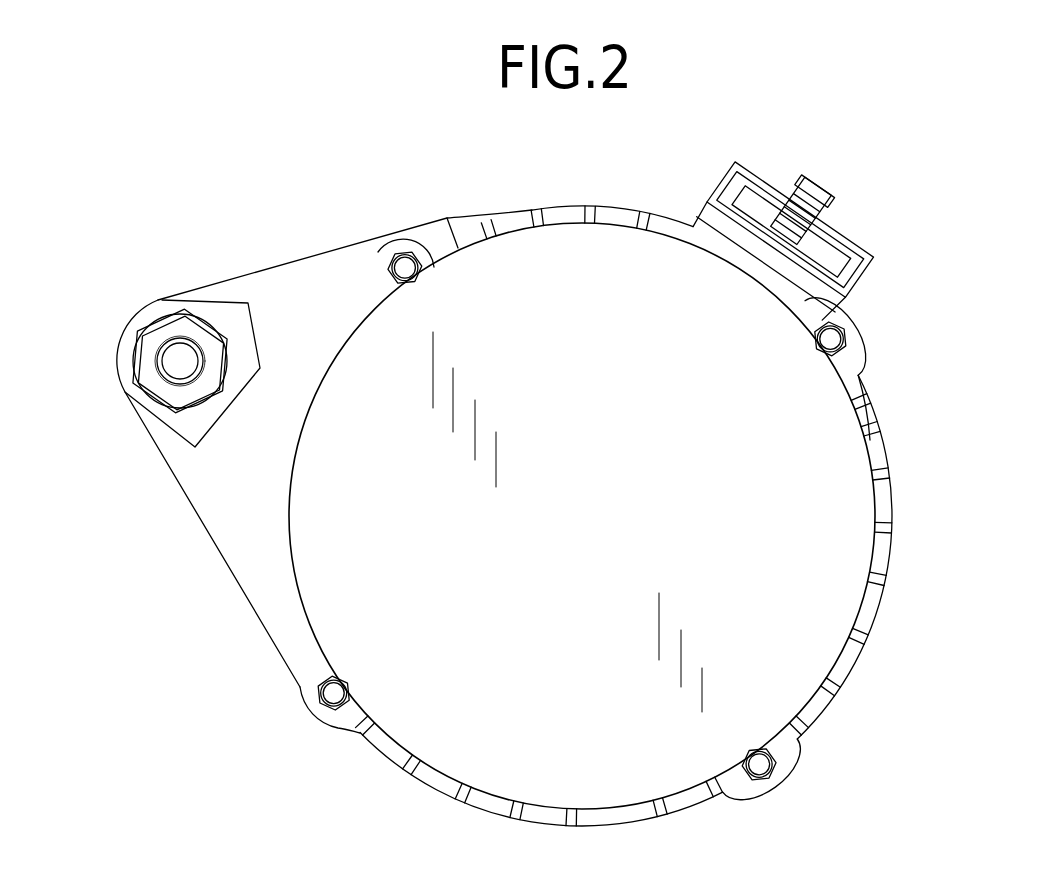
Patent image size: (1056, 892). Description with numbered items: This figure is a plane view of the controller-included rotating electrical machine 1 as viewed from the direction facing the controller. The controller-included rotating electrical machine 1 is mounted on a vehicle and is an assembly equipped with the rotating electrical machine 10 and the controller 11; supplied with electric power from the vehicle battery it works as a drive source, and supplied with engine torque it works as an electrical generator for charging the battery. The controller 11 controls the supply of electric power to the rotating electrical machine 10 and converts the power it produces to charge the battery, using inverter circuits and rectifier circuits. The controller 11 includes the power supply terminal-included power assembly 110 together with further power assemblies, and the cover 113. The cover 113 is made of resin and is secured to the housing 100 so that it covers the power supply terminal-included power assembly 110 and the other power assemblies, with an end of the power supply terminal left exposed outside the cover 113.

The controller-included rotating electrical machine 1 is at (955, 210).
The rotating electrical machine 10 is at (858, 667).
The controller 11 is at (875, 413).
The housing 100 is at (312, 267).
The power supply terminal-included power assembly 110 is at (800, 205).
The cover 113 is at (345, 618).